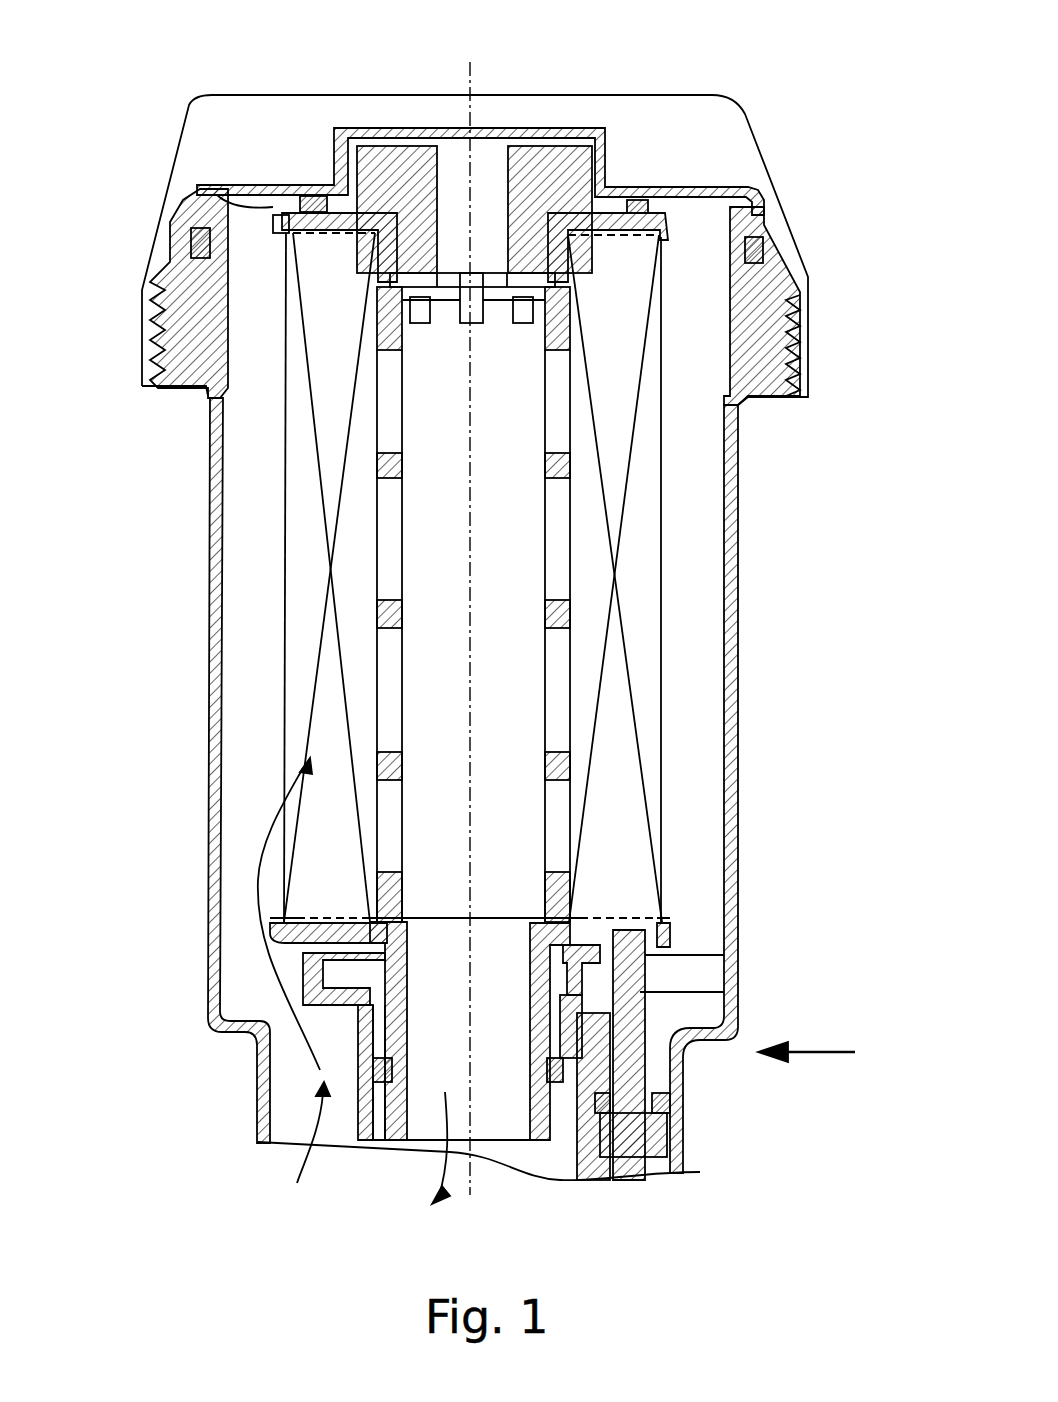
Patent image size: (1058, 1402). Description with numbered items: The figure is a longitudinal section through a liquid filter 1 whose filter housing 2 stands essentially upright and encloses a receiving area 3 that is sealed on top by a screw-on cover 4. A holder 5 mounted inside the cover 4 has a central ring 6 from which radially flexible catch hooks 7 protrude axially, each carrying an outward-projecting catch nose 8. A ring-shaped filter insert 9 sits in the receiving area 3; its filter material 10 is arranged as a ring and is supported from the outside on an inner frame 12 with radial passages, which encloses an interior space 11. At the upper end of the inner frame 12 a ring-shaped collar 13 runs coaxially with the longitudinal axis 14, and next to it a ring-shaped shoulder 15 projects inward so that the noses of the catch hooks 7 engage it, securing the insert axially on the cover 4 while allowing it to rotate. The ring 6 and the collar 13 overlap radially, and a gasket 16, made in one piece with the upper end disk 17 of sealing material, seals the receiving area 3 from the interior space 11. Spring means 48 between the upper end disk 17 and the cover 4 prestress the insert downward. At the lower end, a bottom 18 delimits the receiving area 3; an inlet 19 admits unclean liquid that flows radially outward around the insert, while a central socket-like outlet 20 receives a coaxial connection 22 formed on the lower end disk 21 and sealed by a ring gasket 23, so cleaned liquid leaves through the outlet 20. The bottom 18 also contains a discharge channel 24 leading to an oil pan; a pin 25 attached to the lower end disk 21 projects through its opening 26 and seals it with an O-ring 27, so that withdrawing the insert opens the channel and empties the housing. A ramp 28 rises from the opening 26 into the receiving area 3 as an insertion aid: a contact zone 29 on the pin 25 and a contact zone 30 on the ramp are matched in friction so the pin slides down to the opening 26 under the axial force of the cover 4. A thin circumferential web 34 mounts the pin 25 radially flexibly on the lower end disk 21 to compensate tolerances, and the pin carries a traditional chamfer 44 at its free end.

The liquid filter 1 is at (797, 138).
The filter housing 2 is at (212, 562).
The receiving area 3 is at (690, 540).
The screw-on cover 4 is at (795, 300).
The holder 5 is at (540, 160).
The central ring 6 is at (568, 190).
The catch hooks 7 is at (455, 300).
The catch nose 8 is at (422, 322).
The ring-shaped filter insert 9 is at (643, 630).
The filter material 10 is at (645, 465).
The interior space 11 is at (560, 405).
The inner frame 12 is at (385, 385).
The ring-shaped collar 13 is at (558, 262).
The longitudinal axis 14 is at (470, 62).
The ring-shaped shoulder 15 is at (428, 295).
The gasket 16 is at (618, 200).
The upper end disk 17 is at (280, 220).
The bottom 18 is at (335, 988).
The inlet 19 is at (268, 1105).
The outlet 20 is at (575, 1140).
The lower end disk 21 is at (295, 945).
The coaxial connection 22 is at (392, 1115).
The ring gasket 23 is at (576, 1150).
The discharge channel 24 is at (658, 1163).
The pin 25 is at (650, 1150).
The opening 26 is at (655, 1027).
The O-ring 27 is at (652, 1097).
The ramp 28 is at (410, 965).
The contact zone 29 is at (622, 1170).
The contact zone 30 is at (312, 958).
The web 34 is at (668, 958).
The chamfer 44 is at (660, 1162).
The spring means 48 is at (288, 216).